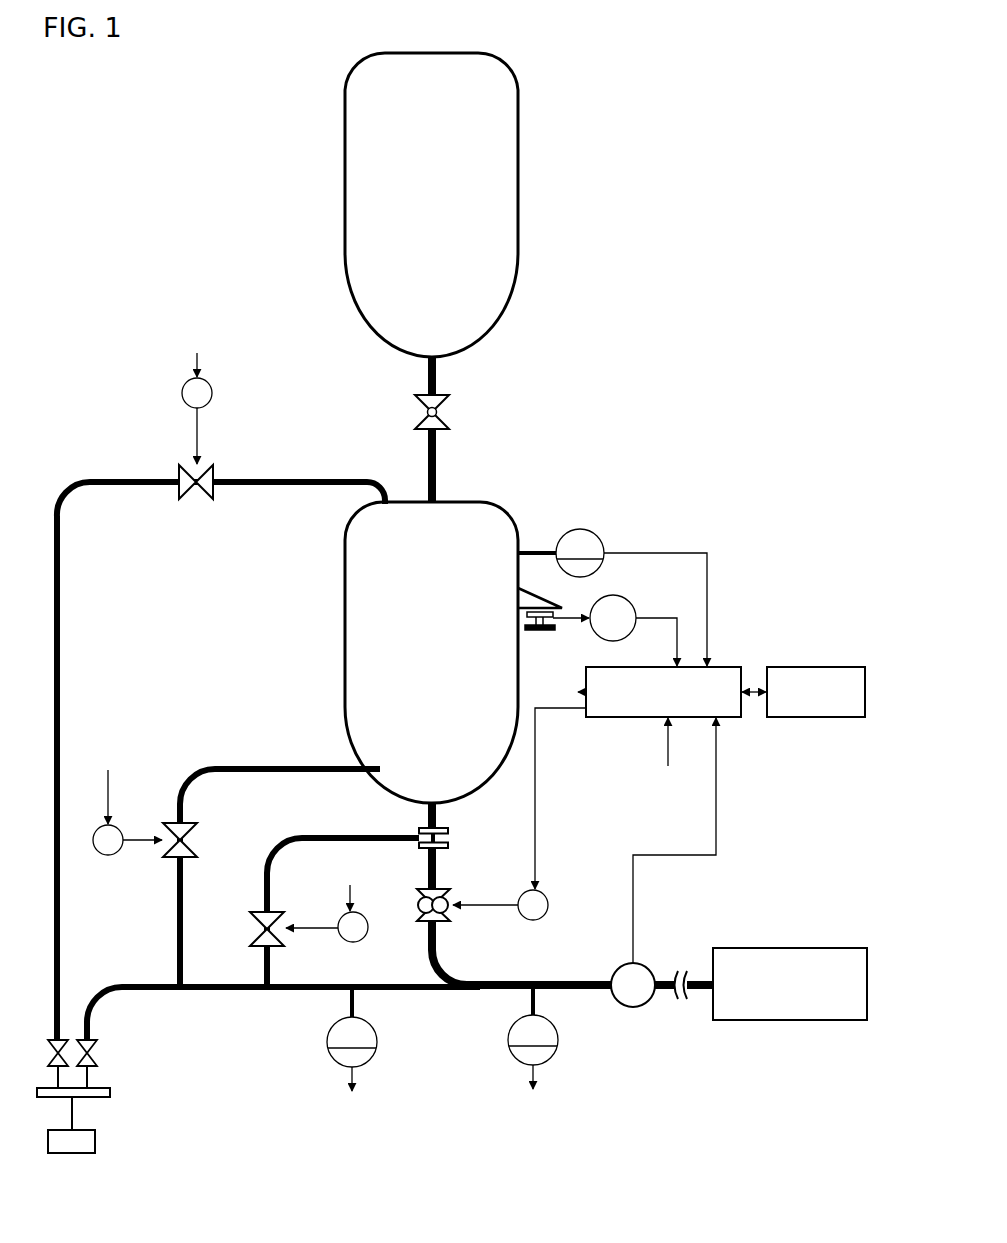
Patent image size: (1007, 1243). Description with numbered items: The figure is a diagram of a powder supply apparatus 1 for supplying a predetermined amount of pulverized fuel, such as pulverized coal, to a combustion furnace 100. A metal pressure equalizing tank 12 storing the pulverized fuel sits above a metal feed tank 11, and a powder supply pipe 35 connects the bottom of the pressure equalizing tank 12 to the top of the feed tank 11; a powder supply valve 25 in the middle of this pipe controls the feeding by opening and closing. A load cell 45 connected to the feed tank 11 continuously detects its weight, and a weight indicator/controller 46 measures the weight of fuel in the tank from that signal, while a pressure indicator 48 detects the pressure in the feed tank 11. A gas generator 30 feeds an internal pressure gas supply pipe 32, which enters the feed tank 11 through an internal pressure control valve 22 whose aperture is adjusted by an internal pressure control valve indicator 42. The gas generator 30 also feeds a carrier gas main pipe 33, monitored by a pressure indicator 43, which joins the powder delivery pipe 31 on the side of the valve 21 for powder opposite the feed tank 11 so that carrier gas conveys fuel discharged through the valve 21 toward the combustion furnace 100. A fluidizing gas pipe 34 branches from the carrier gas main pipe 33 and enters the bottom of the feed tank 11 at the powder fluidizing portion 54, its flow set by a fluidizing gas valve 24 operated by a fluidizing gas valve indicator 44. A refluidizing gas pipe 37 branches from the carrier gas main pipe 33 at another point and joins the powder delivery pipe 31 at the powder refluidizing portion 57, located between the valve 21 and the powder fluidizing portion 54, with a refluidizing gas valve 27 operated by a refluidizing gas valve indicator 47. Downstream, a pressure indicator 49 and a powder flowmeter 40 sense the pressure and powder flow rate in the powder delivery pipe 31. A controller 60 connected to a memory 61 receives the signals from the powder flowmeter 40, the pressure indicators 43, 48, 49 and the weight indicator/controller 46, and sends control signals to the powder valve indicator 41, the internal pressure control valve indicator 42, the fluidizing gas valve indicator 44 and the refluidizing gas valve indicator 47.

The powder supply apparatus 1 is at (688, 58).
The pressure equalizing tank 12 is at (510, 108).
The powder supply valve 25 is at (440, 400).
The powder supply pipe 35 is at (440, 480).
The feed tank 11 is at (490, 515).
The internal pressure gas supply pipe 32 is at (135, 480).
The internal pressure control valve 22 is at (212, 470).
The internal pressure control valve indicator 42 is at (205, 388).
The fluidizing gas pipe 34 is at (262, 768).
The powder fluidizing portion 54 is at (376, 766).
The fluidizing gas valve 24 is at (176, 822).
The fluidizing gas valve indicator 44 is at (106, 850).
The refluidizing gas pipe 37 is at (330, 836).
The refluidizing gas valve 27 is at (263, 913).
The refluidizing gas valve indicator 47 is at (360, 915).
The carrier gas main pipe 33 is at (330, 990).
The powder delivery pipe 31 is at (428, 818).
The powder refluidizing portion 57 is at (450, 831).
The valve for powder 21 is at (440, 890).
The powder valve indicator 41 is at (545, 895).
The pressure indicator 48 is at (600, 540).
The load cell 45 is at (548, 635).
The weight indicator/controller 46 is at (625, 600).
The controller 60 is at (740, 672).
The memory 61 is at (812, 712).
The powder flowmeter 40 is at (645, 970).
The combustion furnace 100 is at (795, 950).
The pressure indicator 43 is at (335, 1058).
The pressure indicator 49 is at (520, 1053).
The gas generator 30 is at (88, 1135).